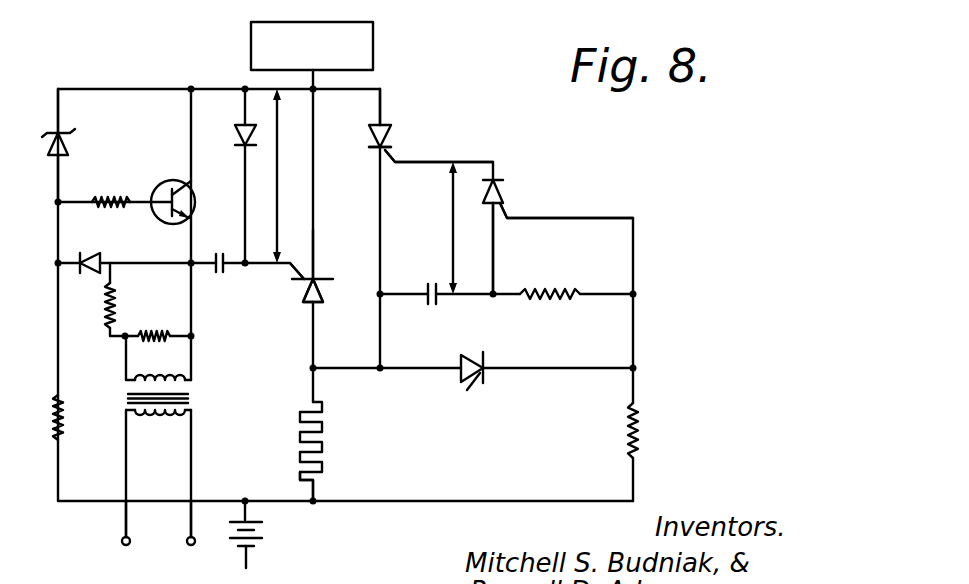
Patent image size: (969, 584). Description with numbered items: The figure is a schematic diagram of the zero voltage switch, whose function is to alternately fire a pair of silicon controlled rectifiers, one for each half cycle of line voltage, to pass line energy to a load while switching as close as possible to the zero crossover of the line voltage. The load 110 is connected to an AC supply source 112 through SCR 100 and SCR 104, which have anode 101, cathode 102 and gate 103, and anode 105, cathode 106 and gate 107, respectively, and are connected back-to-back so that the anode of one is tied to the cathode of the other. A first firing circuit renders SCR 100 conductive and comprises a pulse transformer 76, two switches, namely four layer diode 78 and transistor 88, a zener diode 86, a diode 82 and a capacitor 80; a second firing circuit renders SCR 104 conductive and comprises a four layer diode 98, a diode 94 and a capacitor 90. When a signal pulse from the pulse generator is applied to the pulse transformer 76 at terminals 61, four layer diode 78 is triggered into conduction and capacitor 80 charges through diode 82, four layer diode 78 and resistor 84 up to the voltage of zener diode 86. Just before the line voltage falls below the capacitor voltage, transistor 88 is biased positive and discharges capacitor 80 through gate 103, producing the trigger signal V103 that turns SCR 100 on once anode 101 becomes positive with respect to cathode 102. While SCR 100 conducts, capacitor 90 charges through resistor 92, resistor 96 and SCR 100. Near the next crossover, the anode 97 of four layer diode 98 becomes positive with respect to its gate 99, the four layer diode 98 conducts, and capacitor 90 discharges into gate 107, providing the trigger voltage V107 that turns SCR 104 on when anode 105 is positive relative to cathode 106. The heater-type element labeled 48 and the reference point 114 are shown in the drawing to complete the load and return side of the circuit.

The AC supply source 112 is at (345, 46).
The zener diode 86 is at (79, 145).
The diode 82 is at (227, 121).
The transistor 88 is at (191, 193).
The four layer diode 78 is at (103, 244).
The capacitor 80 is at (220, 284).
The gate 103 is at (275, 287).
The trigger signal V103 is at (322, 176).
The anode 101 is at (329, 306).
The SCR 100 is at (283, 311).
The cathode 102 is at (340, 254).
The SCR 104 is at (409, 124).
The anode 105 is at (411, 97).
The cathode 106 is at (358, 160).
The gate 107 is at (439, 145).
The trigger voltage V107 is at (426, 228).
The four layer diode 98 is at (523, 182).
The gate 99 is at (566, 204).
The anode 97 is at (475, 248).
The resistor 96 is at (557, 274).
The capacitor 90 is at (418, 313).
The diode 94 is at (475, 385).
The resistor 92 is at (608, 430).
The load 110 is at (343, 451).
The heater lead 48 is at (335, 479).
The resistor 84 is at (77, 429).
The pulse transformer 76 is at (185, 395).
The terminals 61 is at (128, 523).
The battery 114 is at (278, 545).